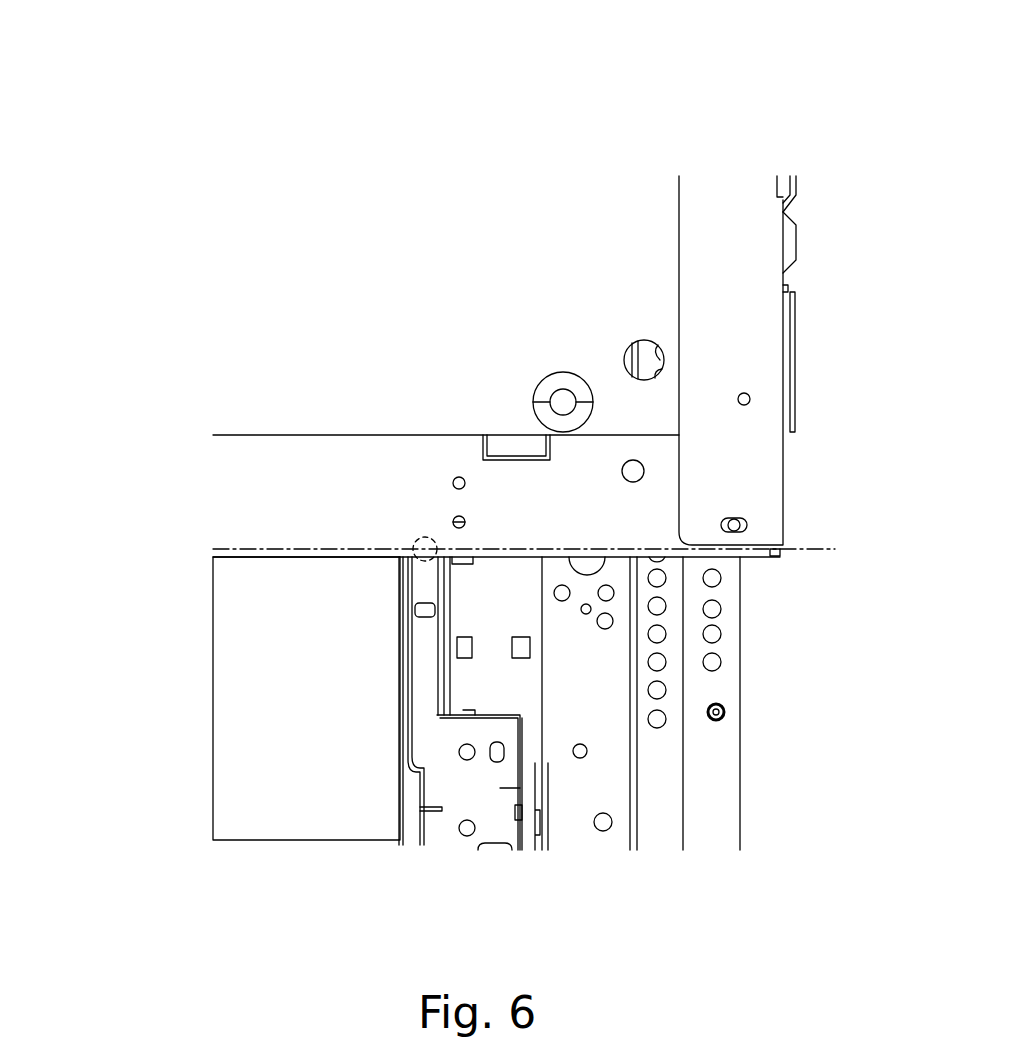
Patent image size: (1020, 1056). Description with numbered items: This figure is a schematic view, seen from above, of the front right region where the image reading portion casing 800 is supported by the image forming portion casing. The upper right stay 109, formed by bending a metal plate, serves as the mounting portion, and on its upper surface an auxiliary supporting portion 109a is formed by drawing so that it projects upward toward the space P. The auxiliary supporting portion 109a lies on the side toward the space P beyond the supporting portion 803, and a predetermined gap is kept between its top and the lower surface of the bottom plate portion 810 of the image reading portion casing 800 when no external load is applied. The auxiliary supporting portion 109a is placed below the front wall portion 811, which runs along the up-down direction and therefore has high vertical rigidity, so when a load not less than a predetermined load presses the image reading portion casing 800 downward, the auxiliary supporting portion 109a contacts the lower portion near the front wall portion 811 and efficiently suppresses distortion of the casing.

The image reading portion casing 800 is at (627, 147).
The bottom plate portion 810 is at (485, 267).
The supporting portion 803 is at (540, 382).
The front wall portion 811 is at (262, 558).
The auxiliary supporting portion 109a is at (427, 536).
The upper right stay 109 is at (707, 793).
The space P is at (213, 744).